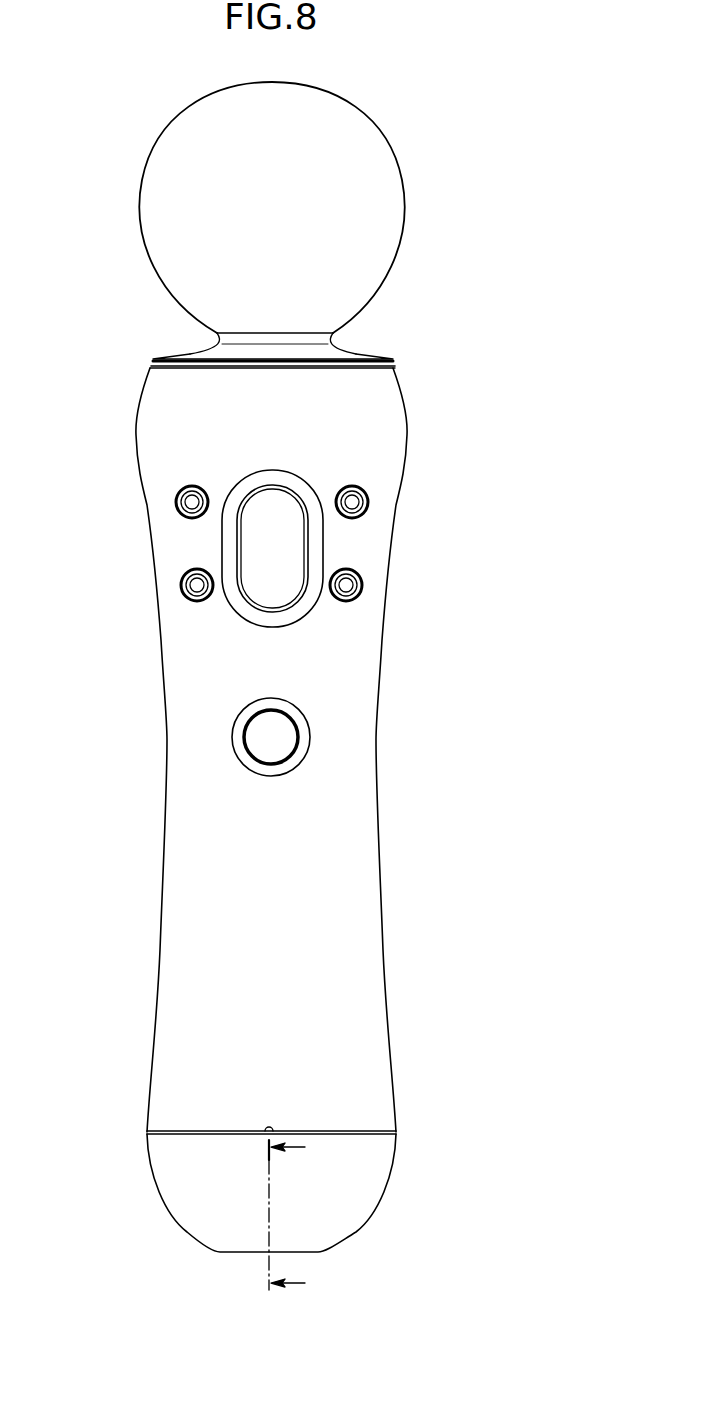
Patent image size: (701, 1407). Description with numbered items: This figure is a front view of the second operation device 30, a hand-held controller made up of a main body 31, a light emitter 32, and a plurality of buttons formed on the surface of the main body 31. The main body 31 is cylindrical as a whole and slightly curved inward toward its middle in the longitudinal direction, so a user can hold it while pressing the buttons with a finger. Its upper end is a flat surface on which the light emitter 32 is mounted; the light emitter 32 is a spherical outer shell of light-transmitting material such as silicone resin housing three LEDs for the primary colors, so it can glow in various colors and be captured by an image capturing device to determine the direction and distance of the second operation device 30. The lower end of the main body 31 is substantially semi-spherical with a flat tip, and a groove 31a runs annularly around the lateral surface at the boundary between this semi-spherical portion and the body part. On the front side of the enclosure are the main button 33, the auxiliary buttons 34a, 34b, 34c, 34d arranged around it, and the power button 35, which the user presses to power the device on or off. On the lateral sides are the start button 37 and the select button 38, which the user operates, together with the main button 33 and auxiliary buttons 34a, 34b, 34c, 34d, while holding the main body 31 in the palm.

The second operation device 30 is at (302, 700).
The main body 31 is at (381, 938).
The groove 31a is at (146, 1133).
The light emitter 32 is at (405, 205).
The main button 33 is at (283, 558).
The auxiliary button 34a is at (175, 502).
The auxiliary button 34b is at (369, 502).
The auxiliary button 34c is at (363, 585).
The auxiliary button 34d is at (180, 585).
The power button 35 is at (278, 734).
The start button 37 is at (402, 531).
The select button 38 is at (139, 532).